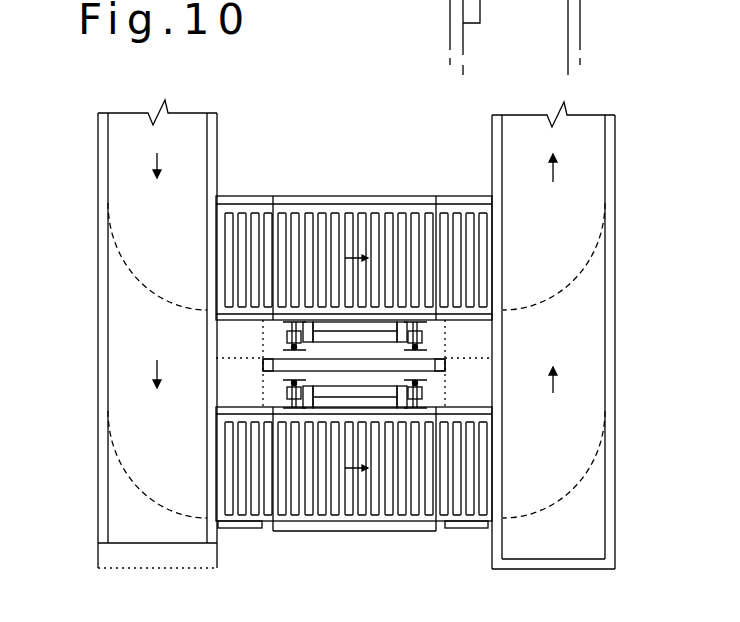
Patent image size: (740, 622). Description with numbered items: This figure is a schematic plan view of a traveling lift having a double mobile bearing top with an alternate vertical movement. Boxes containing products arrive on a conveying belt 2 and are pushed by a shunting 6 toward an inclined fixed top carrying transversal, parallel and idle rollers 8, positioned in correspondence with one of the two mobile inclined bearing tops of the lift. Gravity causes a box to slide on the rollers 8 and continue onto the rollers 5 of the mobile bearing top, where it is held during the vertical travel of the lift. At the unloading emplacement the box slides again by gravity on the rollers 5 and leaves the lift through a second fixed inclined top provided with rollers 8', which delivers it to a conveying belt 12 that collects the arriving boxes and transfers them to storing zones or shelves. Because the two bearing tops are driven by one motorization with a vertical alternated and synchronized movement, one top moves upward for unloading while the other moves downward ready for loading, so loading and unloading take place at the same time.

The conveying belt 2 is at (125, 163).
The conveying belt 12 is at (573, 233).
The shunting 6 is at (120, 254).
The rollers 5 is at (293, 218).
The rollers 8 is at (240, 539).
The rollers 8' is at (466, 540).